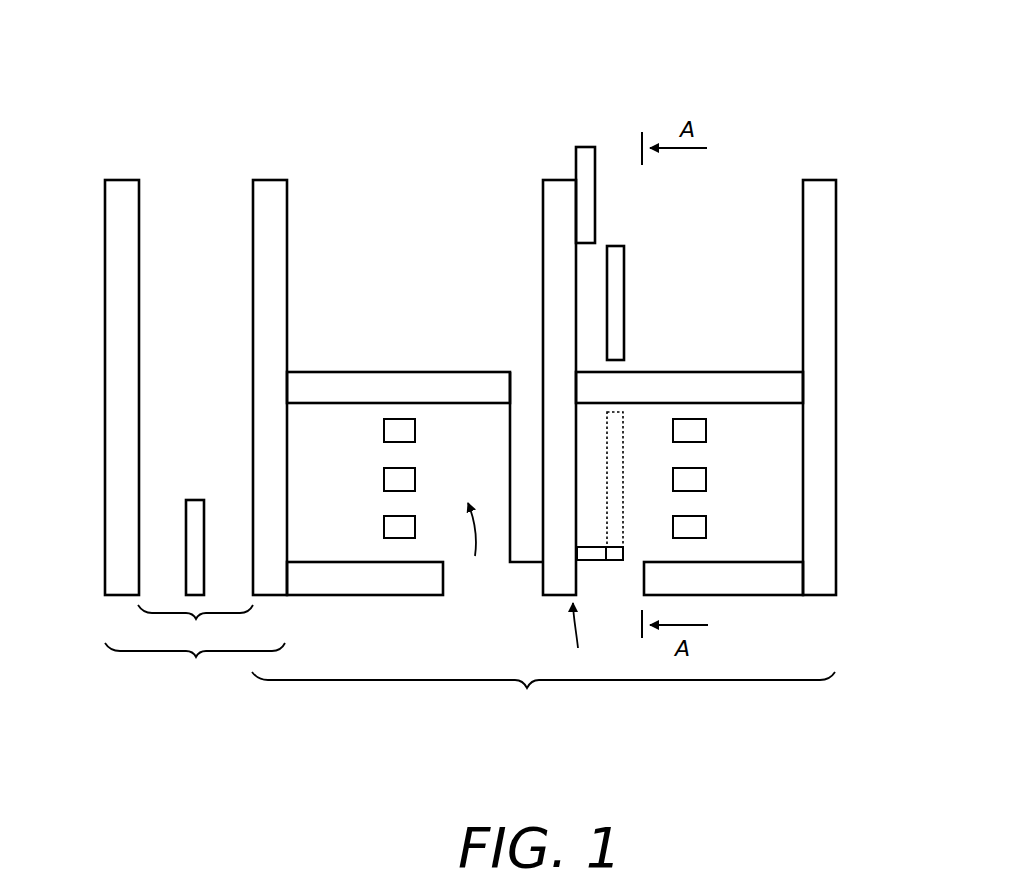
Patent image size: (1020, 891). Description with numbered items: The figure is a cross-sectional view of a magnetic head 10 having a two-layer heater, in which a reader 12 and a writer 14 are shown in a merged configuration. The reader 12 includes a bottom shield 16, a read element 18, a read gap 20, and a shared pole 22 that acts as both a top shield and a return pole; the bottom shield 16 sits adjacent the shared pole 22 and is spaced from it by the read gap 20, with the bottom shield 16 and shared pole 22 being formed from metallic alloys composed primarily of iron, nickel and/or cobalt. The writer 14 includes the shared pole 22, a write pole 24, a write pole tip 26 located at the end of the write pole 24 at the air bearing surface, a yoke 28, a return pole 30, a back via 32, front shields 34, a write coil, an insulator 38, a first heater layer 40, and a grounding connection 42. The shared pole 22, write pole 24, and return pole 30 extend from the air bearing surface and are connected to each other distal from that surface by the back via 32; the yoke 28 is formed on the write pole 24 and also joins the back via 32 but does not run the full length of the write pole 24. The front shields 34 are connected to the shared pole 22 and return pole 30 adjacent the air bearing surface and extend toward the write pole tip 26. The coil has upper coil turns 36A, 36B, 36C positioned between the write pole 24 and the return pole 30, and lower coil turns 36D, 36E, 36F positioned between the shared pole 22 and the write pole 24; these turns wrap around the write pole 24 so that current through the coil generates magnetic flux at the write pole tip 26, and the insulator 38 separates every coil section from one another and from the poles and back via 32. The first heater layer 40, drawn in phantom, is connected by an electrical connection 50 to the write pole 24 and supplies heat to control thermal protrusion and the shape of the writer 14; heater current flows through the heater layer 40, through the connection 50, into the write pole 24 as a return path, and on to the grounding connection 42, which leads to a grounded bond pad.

The magnetic head 10 is at (116, 126).
The reader 12 is at (195, 664).
The writer 14 is at (543, 696).
The bottom shield 16 is at (105, 432).
The read element 18 is at (190, 500).
The read gap 20 is at (195, 625).
The shared pole 22 is at (287, 553).
The write pole 24 is at (543, 300).
The write pole tip 26 is at (575, 640).
The yoke 28 is at (510, 565).
The return pole 30 is at (836, 444).
The back via 32 is at (393, 371).
The front shields 34 is at (388, 597).
The upper coil turn 36A is at (706, 527).
The upper coil turn 36B is at (706, 479).
The upper coil turn 36C is at (706, 430).
The lower coil turn 36D is at (384, 527).
The lower coil turn 36E is at (384, 478).
The lower coil turn 36F is at (384, 428).
The insulator 38 is at (470, 545).
The first heater layer 40 is at (624, 283).
The grounding connection 42 is at (576, 148).
The electrical connection 50 is at (596, 562).